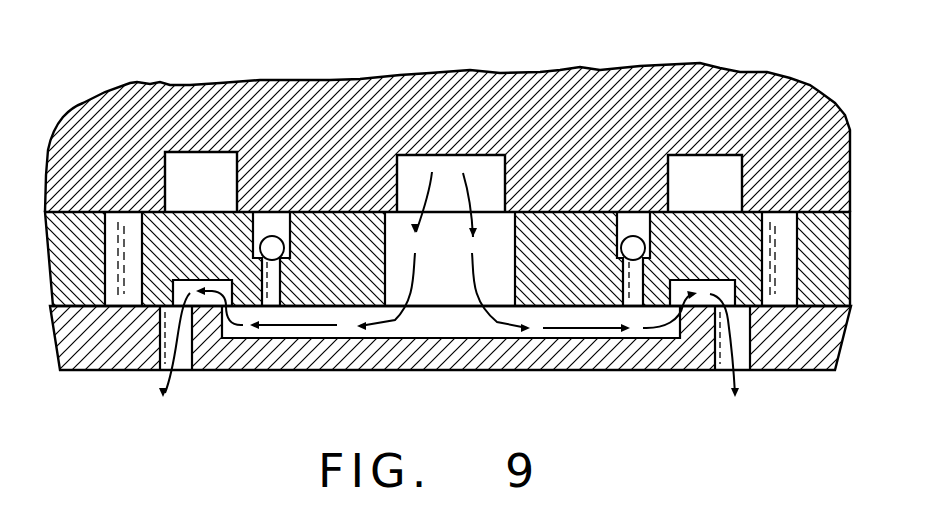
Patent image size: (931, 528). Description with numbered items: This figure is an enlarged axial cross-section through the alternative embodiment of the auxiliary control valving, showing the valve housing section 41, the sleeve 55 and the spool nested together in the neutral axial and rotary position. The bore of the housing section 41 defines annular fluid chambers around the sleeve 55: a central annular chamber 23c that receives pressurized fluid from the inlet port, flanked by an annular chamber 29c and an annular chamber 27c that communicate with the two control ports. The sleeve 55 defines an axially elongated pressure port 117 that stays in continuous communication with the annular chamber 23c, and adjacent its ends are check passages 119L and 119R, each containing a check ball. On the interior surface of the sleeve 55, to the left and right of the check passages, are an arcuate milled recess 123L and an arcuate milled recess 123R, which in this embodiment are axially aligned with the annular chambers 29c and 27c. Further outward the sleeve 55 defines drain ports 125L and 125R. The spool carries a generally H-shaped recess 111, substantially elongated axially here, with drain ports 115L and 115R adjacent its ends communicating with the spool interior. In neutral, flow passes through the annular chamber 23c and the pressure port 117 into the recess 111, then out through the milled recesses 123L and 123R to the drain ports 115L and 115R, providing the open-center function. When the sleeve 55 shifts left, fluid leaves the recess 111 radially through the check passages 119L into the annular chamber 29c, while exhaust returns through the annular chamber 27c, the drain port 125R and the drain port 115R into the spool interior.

The valve housing section 41 is at (357, 107).
The annular chamber 29c is at (215, 173).
The annular chamber 23c is at (481, 175).
The annular chamber 27c is at (712, 175).
The drain port 125L is at (122, 210).
The drain port 125R is at (783, 212).
The check passages 119L is at (272, 218).
The check passages 119R is at (630, 220).
The pressure port 117 is at (492, 263).
The arcuate milled recess 123L is at (185, 288).
The arcuate milled recess 123R is at (692, 279).
The sleeve 55 is at (63, 272).
The H-shaped recess 111 is at (427, 326).
The drain port 115L is at (187, 348).
The drain port 115R is at (707, 357).